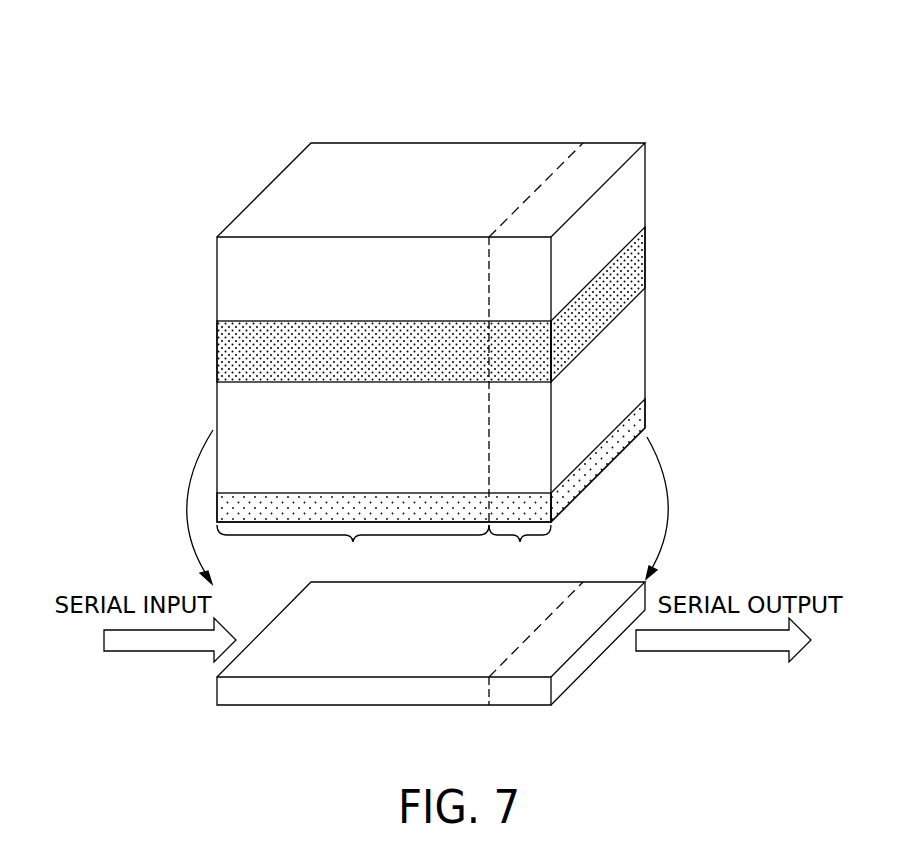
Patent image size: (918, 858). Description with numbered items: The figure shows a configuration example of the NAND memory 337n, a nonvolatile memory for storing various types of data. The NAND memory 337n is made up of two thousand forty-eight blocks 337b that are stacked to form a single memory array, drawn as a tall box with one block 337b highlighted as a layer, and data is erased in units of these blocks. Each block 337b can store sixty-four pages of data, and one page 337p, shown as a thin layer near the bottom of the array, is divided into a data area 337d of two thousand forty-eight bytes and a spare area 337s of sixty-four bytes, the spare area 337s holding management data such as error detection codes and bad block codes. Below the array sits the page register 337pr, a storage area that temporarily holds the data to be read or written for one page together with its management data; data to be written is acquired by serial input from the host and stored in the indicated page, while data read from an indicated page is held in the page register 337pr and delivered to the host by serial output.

The NAND memory 337n is at (703, 90).
The block 337b is at (641, 262).
The page 337p is at (642, 415).
The data area 337d is at (353, 552).
The spare area 337s is at (520, 552).
The page register 337pr is at (573, 680).